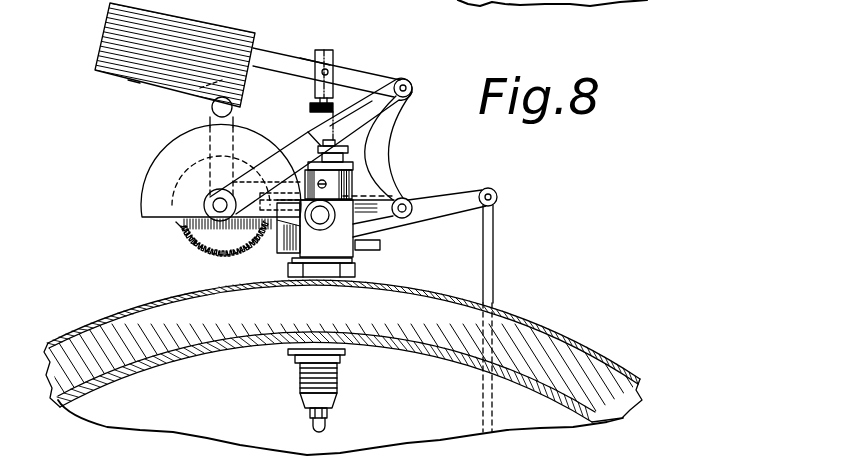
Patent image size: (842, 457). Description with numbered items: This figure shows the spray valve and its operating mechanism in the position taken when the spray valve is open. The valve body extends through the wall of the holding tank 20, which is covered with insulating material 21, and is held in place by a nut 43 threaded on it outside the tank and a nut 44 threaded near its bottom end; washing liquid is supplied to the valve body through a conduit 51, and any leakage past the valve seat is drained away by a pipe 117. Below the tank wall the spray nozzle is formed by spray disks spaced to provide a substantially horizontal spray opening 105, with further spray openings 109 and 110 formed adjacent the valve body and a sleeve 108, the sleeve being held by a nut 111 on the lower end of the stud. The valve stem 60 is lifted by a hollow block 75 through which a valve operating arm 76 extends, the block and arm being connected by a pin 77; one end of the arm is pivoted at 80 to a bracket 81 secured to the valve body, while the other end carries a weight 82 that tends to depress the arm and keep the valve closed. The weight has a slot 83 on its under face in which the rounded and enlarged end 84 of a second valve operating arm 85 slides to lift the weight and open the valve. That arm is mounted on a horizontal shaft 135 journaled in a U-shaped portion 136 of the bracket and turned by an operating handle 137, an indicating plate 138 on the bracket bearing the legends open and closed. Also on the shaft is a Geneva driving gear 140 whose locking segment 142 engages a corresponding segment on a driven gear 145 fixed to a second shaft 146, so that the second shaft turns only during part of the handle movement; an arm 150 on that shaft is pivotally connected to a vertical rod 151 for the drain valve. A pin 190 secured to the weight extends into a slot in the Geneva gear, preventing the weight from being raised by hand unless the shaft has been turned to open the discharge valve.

The holding tank 20 is at (551, 393).
The insulating material 21 is at (541, 346).
The nut 43 is at (356, 270).
The nut 44 is at (292, 352).
The conduit 51 is at (332, 251).
The valve stem 60 is at (307, 121).
The hollow block 75 is at (323, 50).
The valve operating arm 76 is at (356, 73).
The pin 77 is at (304, 62).
The pivot 80 is at (412, 88).
The bracket 81 is at (402, 141).
The weight 82 is at (108, 44).
The slot 83 is at (135, 79).
The rounded and enlarged end 84 is at (212, 107).
The valve operating arm 85 is at (236, 118).
The spray opening 105 is at (340, 380).
The sleeve 108 is at (287, 408).
The spray opening 109 is at (338, 372).
The spray opening 110 is at (342, 388).
The nut 111 is at (308, 421).
The pipe 117 is at (381, 246).
The horizontal shaft 135 is at (190, 228).
The U-shaped portion 136 is at (348, 186).
The operating handle 137 is at (333, 118).
The indicating plate 138 is at (135, 161).
The Geneva driving gear 140 is at (246, 254).
The locking segment 142 is at (227, 231).
The driven gear 145 is at (392, 224).
The second shaft 146 is at (407, 200).
The arm 150 is at (455, 195).
The vertical rod 151 is at (492, 212).
The pin 190 is at (207, 88).